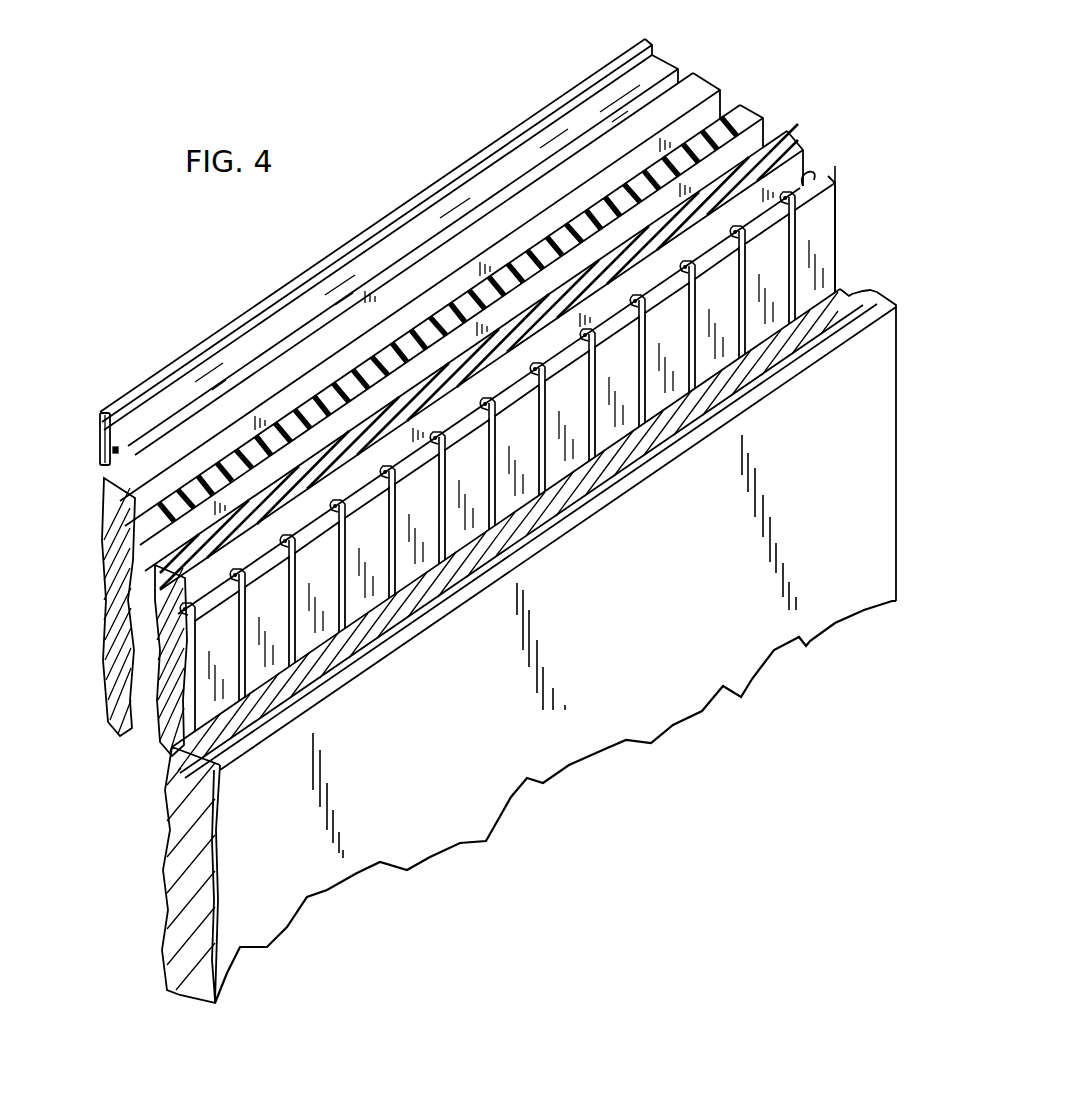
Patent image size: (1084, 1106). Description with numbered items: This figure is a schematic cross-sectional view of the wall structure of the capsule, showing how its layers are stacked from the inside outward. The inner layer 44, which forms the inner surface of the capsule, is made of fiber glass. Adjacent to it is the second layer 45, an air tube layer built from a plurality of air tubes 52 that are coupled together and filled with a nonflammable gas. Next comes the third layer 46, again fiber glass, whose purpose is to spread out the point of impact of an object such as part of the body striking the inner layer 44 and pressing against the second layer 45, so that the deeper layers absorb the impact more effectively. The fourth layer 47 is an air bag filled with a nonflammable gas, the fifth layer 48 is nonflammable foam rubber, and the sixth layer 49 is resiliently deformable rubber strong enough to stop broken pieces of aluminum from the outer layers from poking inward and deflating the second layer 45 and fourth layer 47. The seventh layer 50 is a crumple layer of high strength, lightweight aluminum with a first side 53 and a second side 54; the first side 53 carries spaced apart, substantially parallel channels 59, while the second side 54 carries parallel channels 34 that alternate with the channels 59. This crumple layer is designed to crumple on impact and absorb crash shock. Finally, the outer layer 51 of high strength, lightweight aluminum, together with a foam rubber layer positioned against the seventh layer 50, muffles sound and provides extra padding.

The channels 34 is at (798, 221).
The inner layer 44 is at (125, 395).
The second layer 45 is at (98, 432).
The third layer 46 is at (230, 390).
The fourth layer 47 is at (110, 493).
The fifth layer 48 is at (103, 540).
The sixth layer 49 is at (125, 597).
The seventh layer 50 is at (192, 622).
The outer layer 51 is at (183, 817).
The air tubes 52 is at (100, 457).
The first side 53 is at (798, 184).
The second side 54 is at (835, 193).
The channels 59 is at (802, 183).